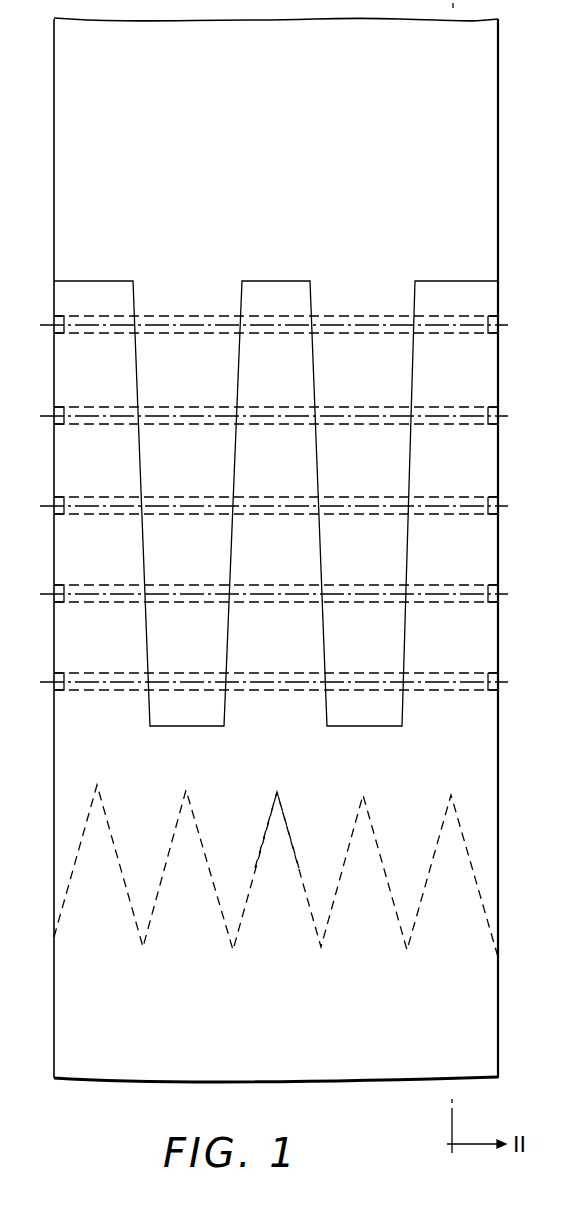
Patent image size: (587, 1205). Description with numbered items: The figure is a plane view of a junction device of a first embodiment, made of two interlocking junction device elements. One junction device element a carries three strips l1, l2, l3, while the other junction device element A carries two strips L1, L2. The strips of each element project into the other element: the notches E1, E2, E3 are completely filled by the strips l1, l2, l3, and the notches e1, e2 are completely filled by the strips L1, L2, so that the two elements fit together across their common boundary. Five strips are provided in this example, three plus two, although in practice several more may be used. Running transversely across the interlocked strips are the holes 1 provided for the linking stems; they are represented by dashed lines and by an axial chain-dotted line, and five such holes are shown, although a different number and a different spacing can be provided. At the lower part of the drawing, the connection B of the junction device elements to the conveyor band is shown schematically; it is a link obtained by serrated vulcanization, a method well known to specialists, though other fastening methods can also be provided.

The holes 1 is at (480, 318).
The junction device element A is at (276, 453).
The connection B is at (472, 867).
The junction device element a is at (277, 814).
The notch E1 is at (96, 358).
The notch E2 is at (276, 358).
The notch E3 is at (455, 358).
The strip L1 is at (188, 358).
The strip L2 is at (363, 358).
The strip l1 is at (96, 466).
The strip l2 is at (276, 466).
The strip l3 is at (454, 466).
The notch e1 is at (187, 466).
The notch e2 is at (365, 466).